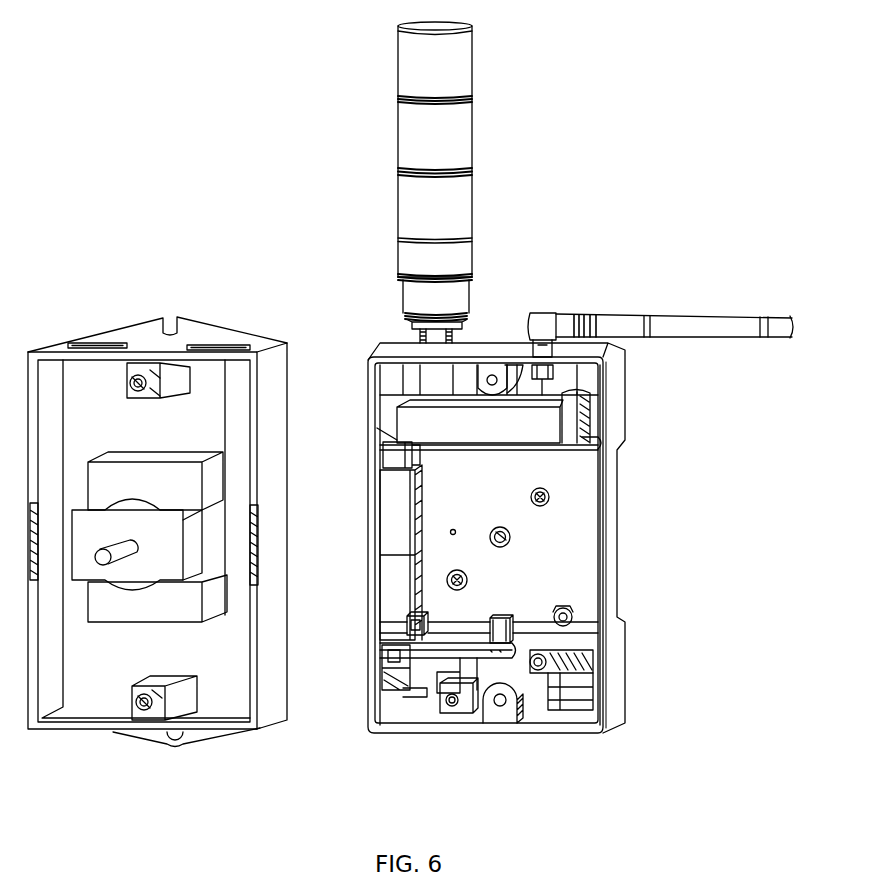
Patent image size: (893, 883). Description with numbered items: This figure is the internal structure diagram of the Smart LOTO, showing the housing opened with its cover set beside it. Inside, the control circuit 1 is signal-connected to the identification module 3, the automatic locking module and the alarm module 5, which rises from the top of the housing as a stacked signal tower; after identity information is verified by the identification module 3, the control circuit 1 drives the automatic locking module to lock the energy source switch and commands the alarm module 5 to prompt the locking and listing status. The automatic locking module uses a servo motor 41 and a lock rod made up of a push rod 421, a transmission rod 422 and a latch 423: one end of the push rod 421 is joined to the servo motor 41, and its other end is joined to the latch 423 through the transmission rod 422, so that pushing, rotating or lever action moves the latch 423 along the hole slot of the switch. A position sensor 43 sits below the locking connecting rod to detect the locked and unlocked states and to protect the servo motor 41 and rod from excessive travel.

The control circuit 1 is at (485, 415).
The identity identification module 3 is at (568, 670).
The alarm module 5 is at (443, 146).
The servo motor 41 is at (405, 517).
The push rod 421 is at (403, 605).
The transmission rod 422 is at (435, 648).
The latch 423 is at (515, 633).
The position sensor 43 is at (440, 695).